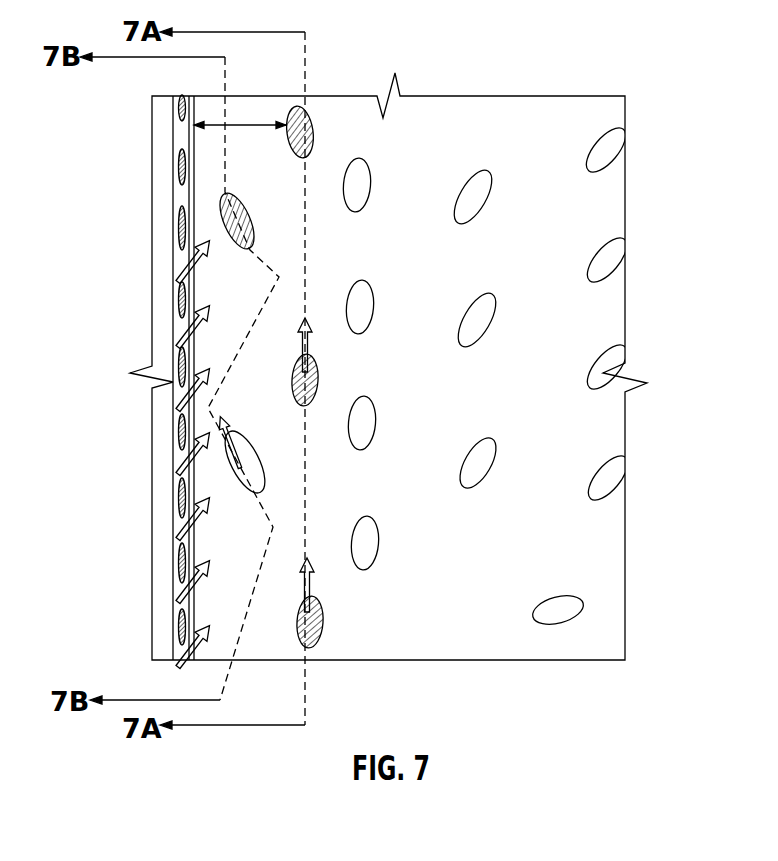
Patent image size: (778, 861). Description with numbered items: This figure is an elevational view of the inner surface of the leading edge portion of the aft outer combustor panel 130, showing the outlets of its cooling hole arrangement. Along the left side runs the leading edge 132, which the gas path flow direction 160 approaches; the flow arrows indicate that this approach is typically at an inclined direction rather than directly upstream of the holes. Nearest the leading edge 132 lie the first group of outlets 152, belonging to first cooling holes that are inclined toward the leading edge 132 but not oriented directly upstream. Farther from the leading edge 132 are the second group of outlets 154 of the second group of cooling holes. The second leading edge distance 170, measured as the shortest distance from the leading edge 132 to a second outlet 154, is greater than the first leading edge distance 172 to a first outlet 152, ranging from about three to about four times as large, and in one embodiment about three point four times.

The aft outer combustor panel 130 is at (416, 110).
The leading edge 132 is at (178, 313).
The first group of outlets 152 is at (247, 443).
The second group of outlets 154 is at (312, 128).
The gas path flow direction 160 is at (183, 657).
The second leading edge distance 170 is at (247, 128).
The first leading edge distance 172 is at (207, 207).